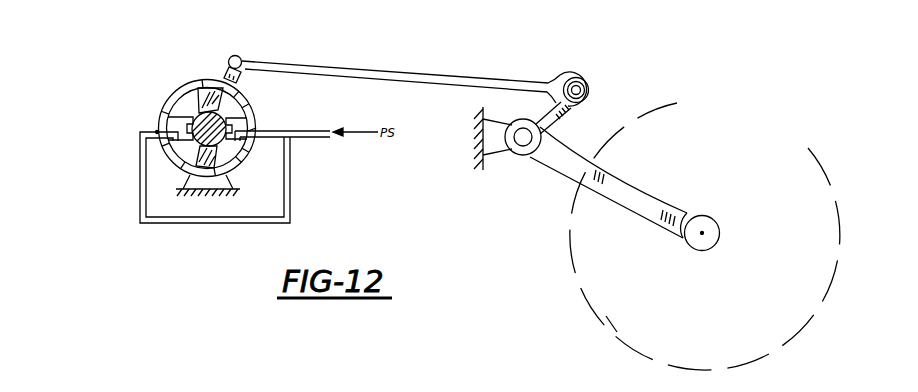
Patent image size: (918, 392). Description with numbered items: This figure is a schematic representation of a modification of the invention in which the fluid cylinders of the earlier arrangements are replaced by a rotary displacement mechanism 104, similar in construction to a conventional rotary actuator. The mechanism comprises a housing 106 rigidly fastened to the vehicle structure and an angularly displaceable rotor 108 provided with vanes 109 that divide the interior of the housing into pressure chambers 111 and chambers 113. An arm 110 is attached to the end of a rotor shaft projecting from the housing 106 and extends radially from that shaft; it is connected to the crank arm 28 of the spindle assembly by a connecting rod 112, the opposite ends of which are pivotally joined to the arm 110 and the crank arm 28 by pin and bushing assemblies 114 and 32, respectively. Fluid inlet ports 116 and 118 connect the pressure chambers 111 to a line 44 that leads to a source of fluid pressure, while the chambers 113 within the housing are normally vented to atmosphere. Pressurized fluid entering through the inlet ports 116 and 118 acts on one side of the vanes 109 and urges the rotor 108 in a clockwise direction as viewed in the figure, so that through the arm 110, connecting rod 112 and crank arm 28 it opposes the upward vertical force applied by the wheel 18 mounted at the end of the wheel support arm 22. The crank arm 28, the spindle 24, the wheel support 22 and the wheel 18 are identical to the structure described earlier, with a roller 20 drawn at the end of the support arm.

The wheel 18 is at (612, 324).
The roller 20 is at (707, 243).
The wheel support arm 22 is at (646, 192).
The spindle 24 is at (523, 140).
The crank arm 28 is at (577, 118).
The pin and bushing assembly 32 is at (586, 80).
The line 44 is at (320, 140).
The rotary displacement mechanism 104 is at (135, 97).
The housing 106 is at (165, 175).
The rotor 108 is at (242, 92).
The vanes 109 is at (195, 101).
The arm 110 is at (232, 55).
The pressure chambers 111 is at (182, 105).
The connecting rod 112 is at (373, 68).
The chambers 113 is at (165, 152).
The pin and bushing assembly 114 is at (242, 59).
The fluid inlet port 116 is at (156, 132).
The fluid inlet port 118 is at (254, 135).